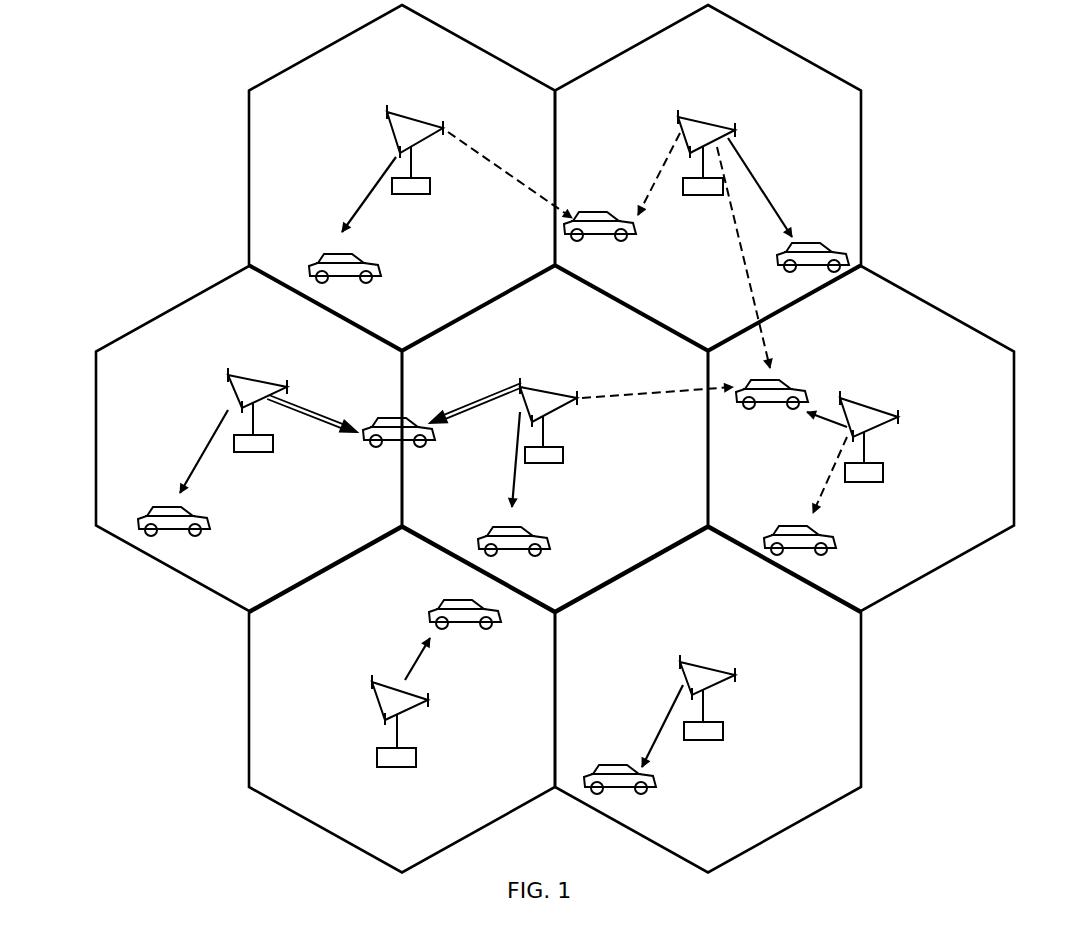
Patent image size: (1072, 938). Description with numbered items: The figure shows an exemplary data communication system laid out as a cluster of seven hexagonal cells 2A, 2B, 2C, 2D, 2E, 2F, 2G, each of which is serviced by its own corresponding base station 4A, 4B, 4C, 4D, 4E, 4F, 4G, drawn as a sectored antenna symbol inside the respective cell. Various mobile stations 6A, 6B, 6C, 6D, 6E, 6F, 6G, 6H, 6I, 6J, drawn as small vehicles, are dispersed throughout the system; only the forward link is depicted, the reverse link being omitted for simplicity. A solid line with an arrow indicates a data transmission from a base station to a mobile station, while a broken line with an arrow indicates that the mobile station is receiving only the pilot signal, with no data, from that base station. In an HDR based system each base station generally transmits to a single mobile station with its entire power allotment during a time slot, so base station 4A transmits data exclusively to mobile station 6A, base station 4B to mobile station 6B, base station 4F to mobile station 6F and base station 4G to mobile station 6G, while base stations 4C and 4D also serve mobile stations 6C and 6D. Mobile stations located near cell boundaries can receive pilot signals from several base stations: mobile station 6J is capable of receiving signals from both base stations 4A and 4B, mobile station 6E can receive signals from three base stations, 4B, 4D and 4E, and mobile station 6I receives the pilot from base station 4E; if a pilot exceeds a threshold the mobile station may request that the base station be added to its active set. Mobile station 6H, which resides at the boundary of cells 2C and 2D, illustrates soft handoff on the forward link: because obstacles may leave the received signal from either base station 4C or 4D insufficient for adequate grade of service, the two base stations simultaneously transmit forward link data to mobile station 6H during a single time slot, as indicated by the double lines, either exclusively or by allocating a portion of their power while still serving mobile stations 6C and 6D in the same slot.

The cell 2A is at (335, 40).
The cell 2B is at (775, 42).
The cell 2C is at (165, 312).
The cell 2D is at (574, 313).
The cell 2E is at (1015, 442).
The cell 2F is at (249, 708).
The cell 2G is at (863, 673).
The base station 4A is at (399, 119).
The base station 4B is at (691, 119).
The base station 4C is at (241, 377).
The base station 4D is at (533, 389).
The base station 4E is at (854, 404).
The base station 4F is at (373, 688).
The base station 4G is at (691, 664).
The mobile station 6A is at (336, 252).
The mobile station 6B is at (806, 243).
The mobile station 6C is at (166, 507).
The mobile station 6D is at (508, 527).
The mobile station 6E is at (766, 380).
The mobile station 6F is at (460, 600).
The mobile station 6G is at (614, 765).
The mobile station 6H is at (394, 418).
The mobile station 6I is at (794, 526).
The mobile station 6J is at (597, 212).